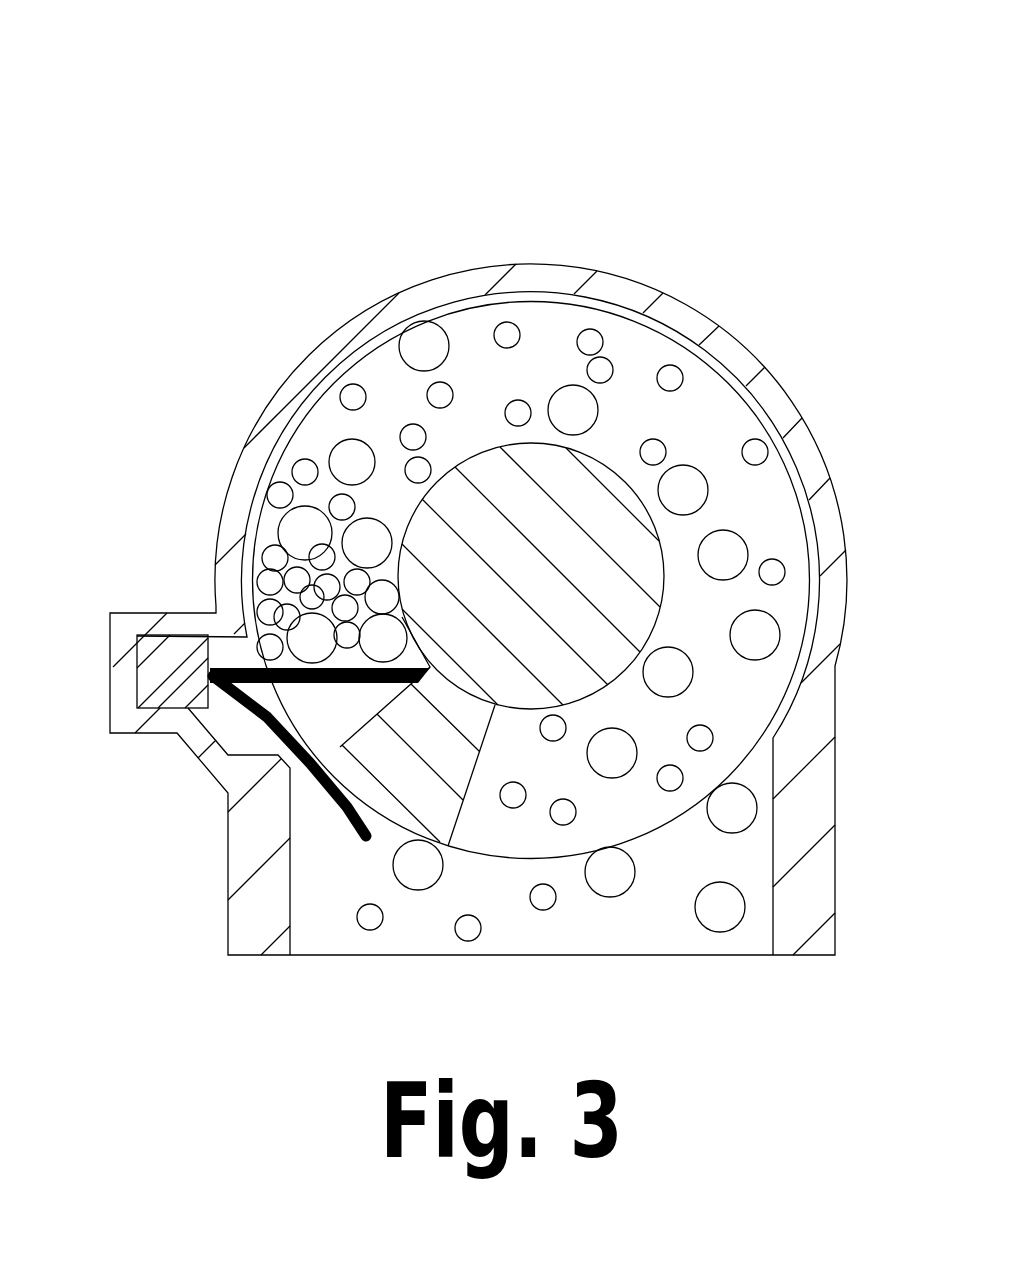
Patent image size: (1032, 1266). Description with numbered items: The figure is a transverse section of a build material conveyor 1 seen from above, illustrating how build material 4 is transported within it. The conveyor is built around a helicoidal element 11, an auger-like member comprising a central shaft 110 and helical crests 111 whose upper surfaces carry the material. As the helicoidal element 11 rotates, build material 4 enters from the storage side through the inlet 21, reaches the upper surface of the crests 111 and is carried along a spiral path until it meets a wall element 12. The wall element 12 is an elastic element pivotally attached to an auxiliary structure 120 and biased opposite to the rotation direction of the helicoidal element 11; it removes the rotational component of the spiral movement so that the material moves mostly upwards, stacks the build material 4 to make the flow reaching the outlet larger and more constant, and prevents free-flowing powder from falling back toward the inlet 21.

The build material conveyor 1 is at (647, 293).
The helicoidal element 11 is at (335, 377).
The shaft 110 is at (460, 515).
The crests 111 is at (310, 447).
The wall element 12 is at (360, 678).
The auxiliary structure 120 is at (173, 673).
The inlet 21 is at (420, 900).
The build material 4 is at (748, 633).